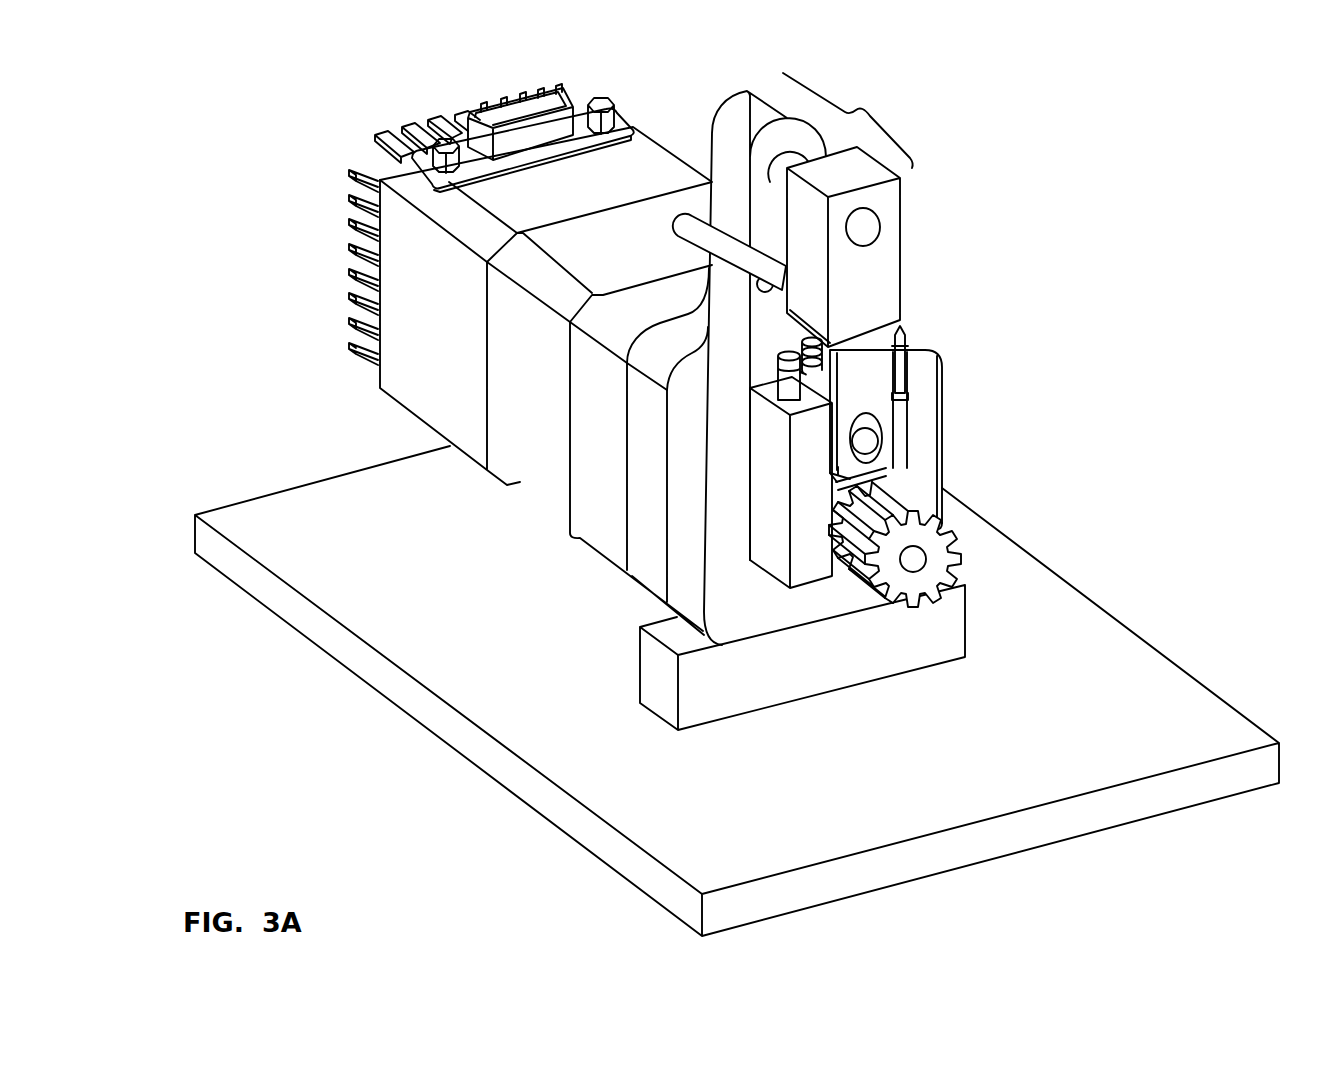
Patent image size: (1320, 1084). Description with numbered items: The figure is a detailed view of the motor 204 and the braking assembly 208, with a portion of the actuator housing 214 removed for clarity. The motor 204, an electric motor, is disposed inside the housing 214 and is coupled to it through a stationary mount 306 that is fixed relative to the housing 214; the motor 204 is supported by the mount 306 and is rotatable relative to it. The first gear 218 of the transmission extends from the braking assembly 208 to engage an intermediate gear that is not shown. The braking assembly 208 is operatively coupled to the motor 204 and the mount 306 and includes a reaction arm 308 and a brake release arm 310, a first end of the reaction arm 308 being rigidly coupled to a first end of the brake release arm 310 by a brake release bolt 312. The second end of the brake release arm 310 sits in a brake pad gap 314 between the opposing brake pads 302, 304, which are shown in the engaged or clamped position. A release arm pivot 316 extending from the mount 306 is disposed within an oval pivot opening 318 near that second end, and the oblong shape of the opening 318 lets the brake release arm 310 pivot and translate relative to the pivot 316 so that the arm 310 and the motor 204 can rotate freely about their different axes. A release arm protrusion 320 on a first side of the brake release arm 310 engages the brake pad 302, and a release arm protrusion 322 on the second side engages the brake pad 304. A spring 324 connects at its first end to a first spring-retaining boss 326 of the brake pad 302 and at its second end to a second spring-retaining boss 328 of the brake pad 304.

The motor 204 is at (296, 281).
The braking assembly 208 is at (858, 110).
The actuator housing 214 is at (1152, 632).
The first gear 218 is at (946, 560).
The brake pad 302 is at (943, 501).
The brake pad 304 is at (837, 467).
The stationary mount 306 is at (767, 656).
The reaction arm 308 is at (730, 112).
The brake release arm 310 is at (888, 212).
The brake release bolt 312 is at (865, 230).
The brake pad gap 314 is at (855, 479).
The release arm pivot 316 is at (887, 472).
The pivot opening 318 is at (867, 443).
The release arm protrusion 320 is at (800, 381).
The release arm protrusion 322 is at (840, 509).
The spring 324 is at (772, 350).
The first spring-retaining boss 326 is at (902, 333).
The second spring-retaining boss 328 is at (873, 414).